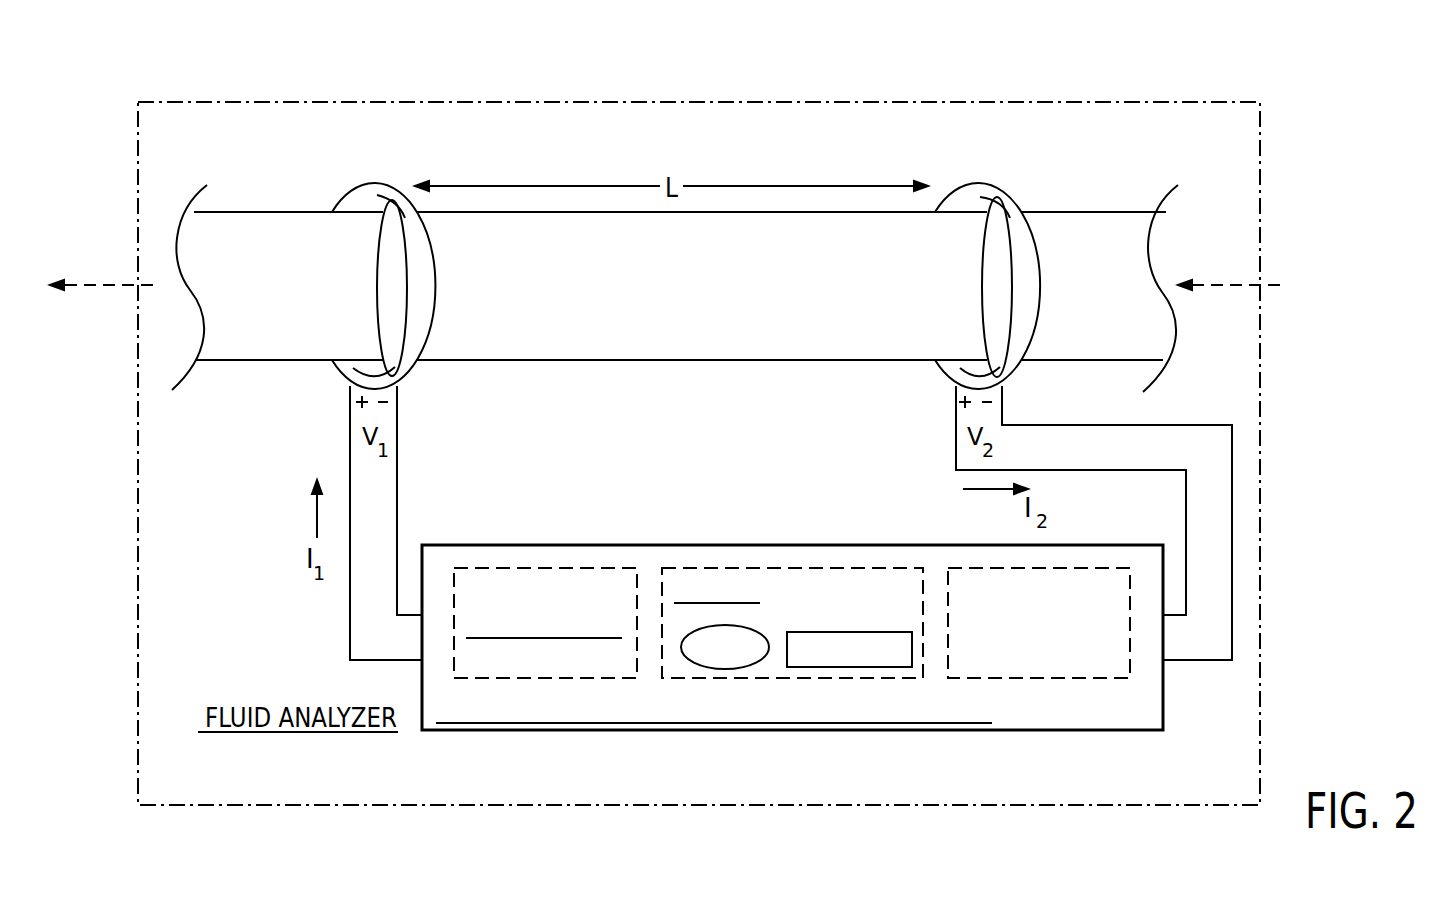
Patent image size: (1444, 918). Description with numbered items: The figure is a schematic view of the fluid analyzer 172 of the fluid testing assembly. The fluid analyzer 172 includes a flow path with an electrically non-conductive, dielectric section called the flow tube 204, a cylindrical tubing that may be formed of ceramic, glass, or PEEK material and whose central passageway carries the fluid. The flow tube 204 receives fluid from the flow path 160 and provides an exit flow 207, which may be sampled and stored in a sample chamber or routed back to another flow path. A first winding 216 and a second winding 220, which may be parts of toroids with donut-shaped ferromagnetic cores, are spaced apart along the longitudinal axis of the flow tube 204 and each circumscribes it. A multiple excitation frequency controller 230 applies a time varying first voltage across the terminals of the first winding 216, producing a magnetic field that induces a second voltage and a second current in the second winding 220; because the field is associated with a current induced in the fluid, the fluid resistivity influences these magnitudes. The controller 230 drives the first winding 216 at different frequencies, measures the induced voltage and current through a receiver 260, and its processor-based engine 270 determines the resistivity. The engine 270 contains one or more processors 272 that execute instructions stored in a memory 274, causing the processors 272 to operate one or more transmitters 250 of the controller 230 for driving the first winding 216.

The fluid analyzer 172 is at (878, 80).
The flow tube 204 is at (735, 385).
The first winding 216 is at (363, 197).
The second winding 220 is at (1005, 198).
The exit flow 207 is at (83, 284).
The flow path 160 is at (1248, 285).
The multiple excitation frequency controller 230 is at (790, 731).
The transmitter 250 is at (545, 568).
The engine 270 is at (792, 568).
The processor 272 is at (682, 648).
The memory 274 is at (850, 632).
The receiver 260 is at (1110, 568).